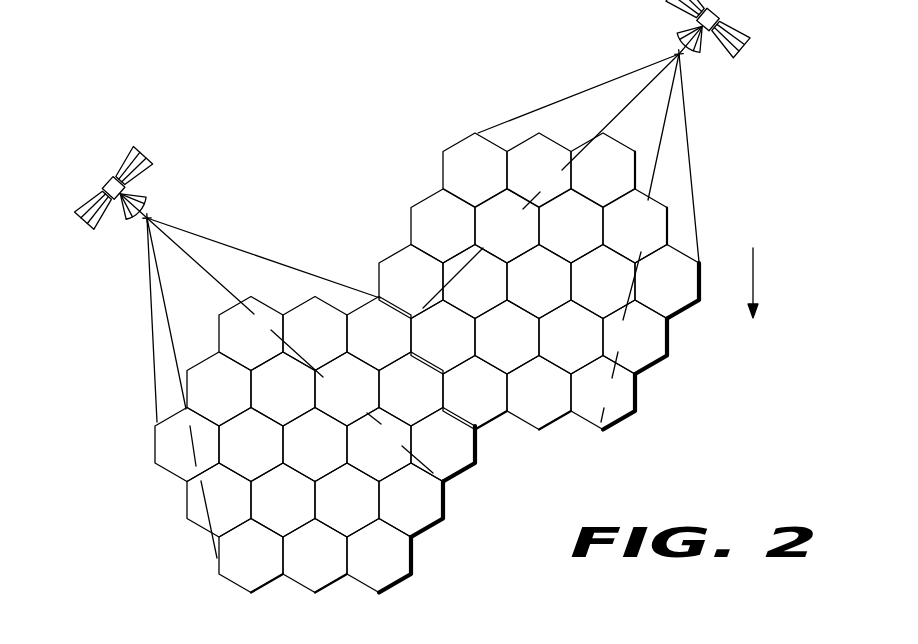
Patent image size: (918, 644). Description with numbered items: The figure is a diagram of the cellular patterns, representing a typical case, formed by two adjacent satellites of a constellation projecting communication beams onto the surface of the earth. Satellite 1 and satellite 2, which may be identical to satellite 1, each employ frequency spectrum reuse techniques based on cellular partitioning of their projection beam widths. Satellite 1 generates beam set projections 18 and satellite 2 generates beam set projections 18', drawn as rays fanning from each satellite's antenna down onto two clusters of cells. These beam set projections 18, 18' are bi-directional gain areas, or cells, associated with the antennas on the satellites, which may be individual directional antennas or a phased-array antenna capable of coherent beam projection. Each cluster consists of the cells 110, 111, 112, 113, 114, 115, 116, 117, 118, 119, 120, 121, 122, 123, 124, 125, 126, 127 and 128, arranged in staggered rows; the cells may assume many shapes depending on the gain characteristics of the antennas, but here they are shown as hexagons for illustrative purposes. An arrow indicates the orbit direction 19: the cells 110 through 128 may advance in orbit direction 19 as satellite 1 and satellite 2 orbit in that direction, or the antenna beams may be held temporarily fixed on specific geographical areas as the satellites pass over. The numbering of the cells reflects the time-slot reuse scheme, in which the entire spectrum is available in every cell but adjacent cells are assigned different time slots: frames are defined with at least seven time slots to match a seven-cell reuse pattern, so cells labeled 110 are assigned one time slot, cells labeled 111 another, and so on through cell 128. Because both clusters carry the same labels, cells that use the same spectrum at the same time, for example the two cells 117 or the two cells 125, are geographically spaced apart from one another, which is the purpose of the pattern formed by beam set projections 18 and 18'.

The satellite 1 is at (123, 152).
The satellite 2 is at (747, 22).
The beam set projections 18 is at (265, 383).
The beam set projections 18' is at (580, 233).
The orbit direction 19 is at (760, 283).
The cell 110 is at (267, 352).
The cell 111 is at (331, 352).
The cell 112 is at (395, 352).
The cell 113 is at (235, 407).
The cell 114 is at (299, 407).
The cell 115 is at (363, 407).
The cell 116 is at (427, 407).
The cell 117 is at (203, 462).
The cell 118 is at (267, 462).
The cell 119 is at (331, 462).
The cell 120 is at (395, 462).
The cell 121 is at (459, 462).
The cell 122 is at (235, 518).
The cell 123 is at (299, 518).
The cell 124 is at (363, 518).
The cell 125 is at (427, 518).
The cell 126 is at (267, 574).
The cell 127 is at (331, 574).
The cell 128 is at (395, 574).